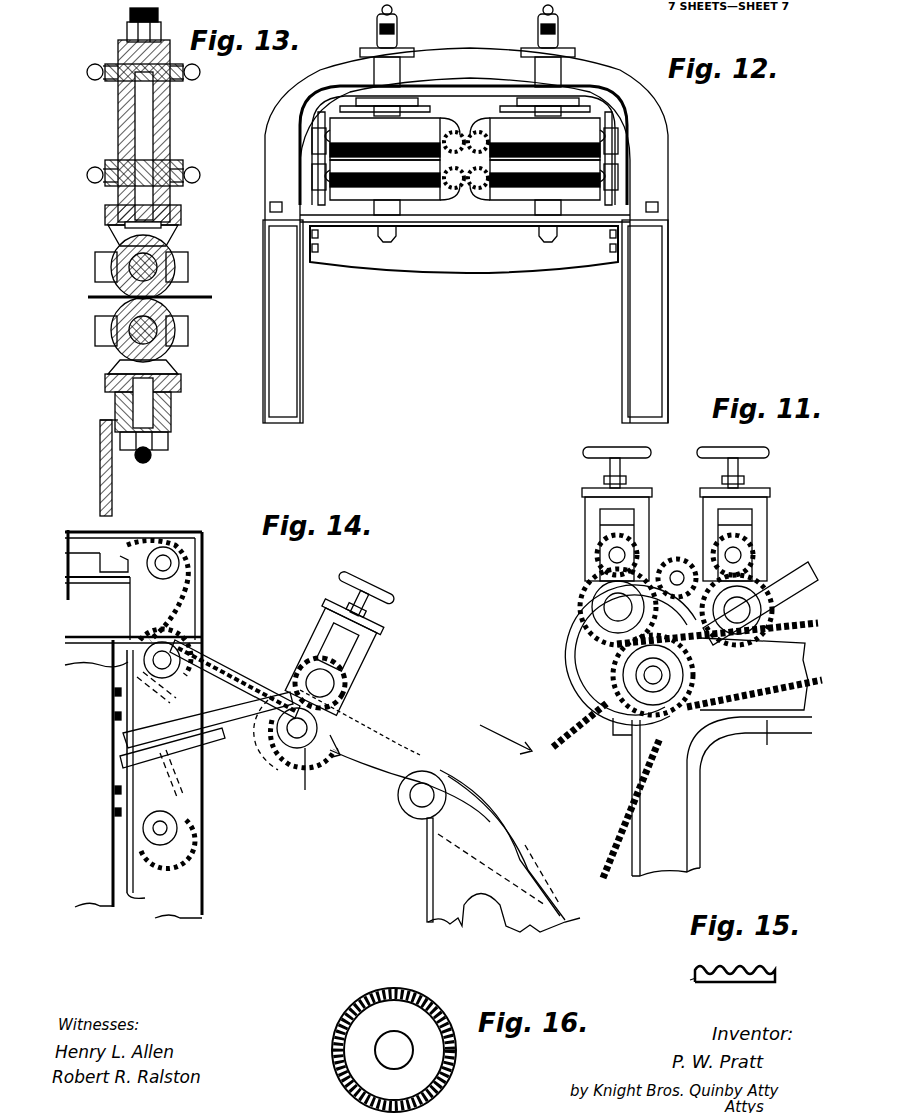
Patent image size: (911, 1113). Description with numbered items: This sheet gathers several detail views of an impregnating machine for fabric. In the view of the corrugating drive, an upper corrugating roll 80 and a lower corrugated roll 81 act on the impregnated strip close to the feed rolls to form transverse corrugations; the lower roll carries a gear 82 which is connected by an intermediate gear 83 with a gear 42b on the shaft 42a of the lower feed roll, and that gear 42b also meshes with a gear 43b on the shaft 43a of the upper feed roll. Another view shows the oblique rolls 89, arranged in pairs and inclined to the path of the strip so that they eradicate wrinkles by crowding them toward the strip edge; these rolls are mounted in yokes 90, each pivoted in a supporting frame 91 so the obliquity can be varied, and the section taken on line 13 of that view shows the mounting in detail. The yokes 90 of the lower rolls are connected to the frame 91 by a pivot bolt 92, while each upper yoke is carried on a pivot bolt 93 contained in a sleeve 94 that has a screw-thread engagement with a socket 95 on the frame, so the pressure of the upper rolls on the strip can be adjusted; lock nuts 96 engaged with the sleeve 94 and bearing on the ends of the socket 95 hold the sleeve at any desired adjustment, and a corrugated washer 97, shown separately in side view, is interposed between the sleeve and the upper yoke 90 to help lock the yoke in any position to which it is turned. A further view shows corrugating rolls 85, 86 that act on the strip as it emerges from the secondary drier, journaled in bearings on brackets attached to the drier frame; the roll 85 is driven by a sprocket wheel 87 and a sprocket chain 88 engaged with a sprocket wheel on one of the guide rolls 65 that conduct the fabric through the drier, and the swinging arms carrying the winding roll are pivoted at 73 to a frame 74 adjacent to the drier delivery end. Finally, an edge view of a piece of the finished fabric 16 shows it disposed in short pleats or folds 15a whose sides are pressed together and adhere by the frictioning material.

In FIG. 12, the section line 13 is at (395, 18).
In FIG. 15, the pleats or folds 15a is at (735, 978).
In FIG. 15, the spring 16 is at (694, 980).
In FIG. 11, the shaft of roll 42 42a is at (687, 756).
In FIG. 11, the gear on shaft 42a 42b is at (768, 604).
In FIG. 11, the shaft of upper roll 43 43a is at (740, 556).
In FIG. 11, the gear on shaft 43a 43b is at (735, 553).
In FIG. 14, the guide rolls 65 is at (180, 666).
In FIG. 14, the pivot 73 is at (420, 798).
In FIG. 14, the frame 74 is at (427, 906).
In FIG. 11, the corrugating roll 80 is at (585, 580).
In FIG. 11, the lower corrugated roll 81 is at (580, 604).
In FIG. 11, the gear 82 is at (574, 616).
In FIG. 11, the intermediate gear 83 is at (684, 562).
In FIG. 14, the corrugating roll 85 is at (297, 750).
In FIG. 14, the corrugating roll 86 is at (350, 688).
In FIG. 14, the sprocket wheel 87 is at (262, 702).
In FIG. 14, the sprocket chain 88 is at (262, 680).
In FIG. 13, the oblique rolls 89 is at (176, 270).
In FIG. 12, the oblique rolls 89 is at (497, 124).
In FIG. 13, the yokes 90 is at (178, 223).
In FIG. 12, the yokes 90 is at (578, 116).
In FIG. 12, the supporting frame 91 is at (650, 190).
In FIG. 13, the pivot bolt 92 is at (172, 416).
In FIG. 13, the pivot bolt 93 is at (170, 105).
In FIG. 13, the sleeve 94 is at (118, 94).
In FIG. 12, the sleeve 94 is at (538, 46).
In FIG. 13, the socket 95 is at (118, 124).
In FIG. 13, the lock nuts 96 is at (184, 92).
In FIG. 12, the lock nuts 96 is at (378, 48).
In FIG. 13, the corrugated washer 97 is at (108, 203).
In FIG. 16, the corrugated washer 97 is at (394, 1050).